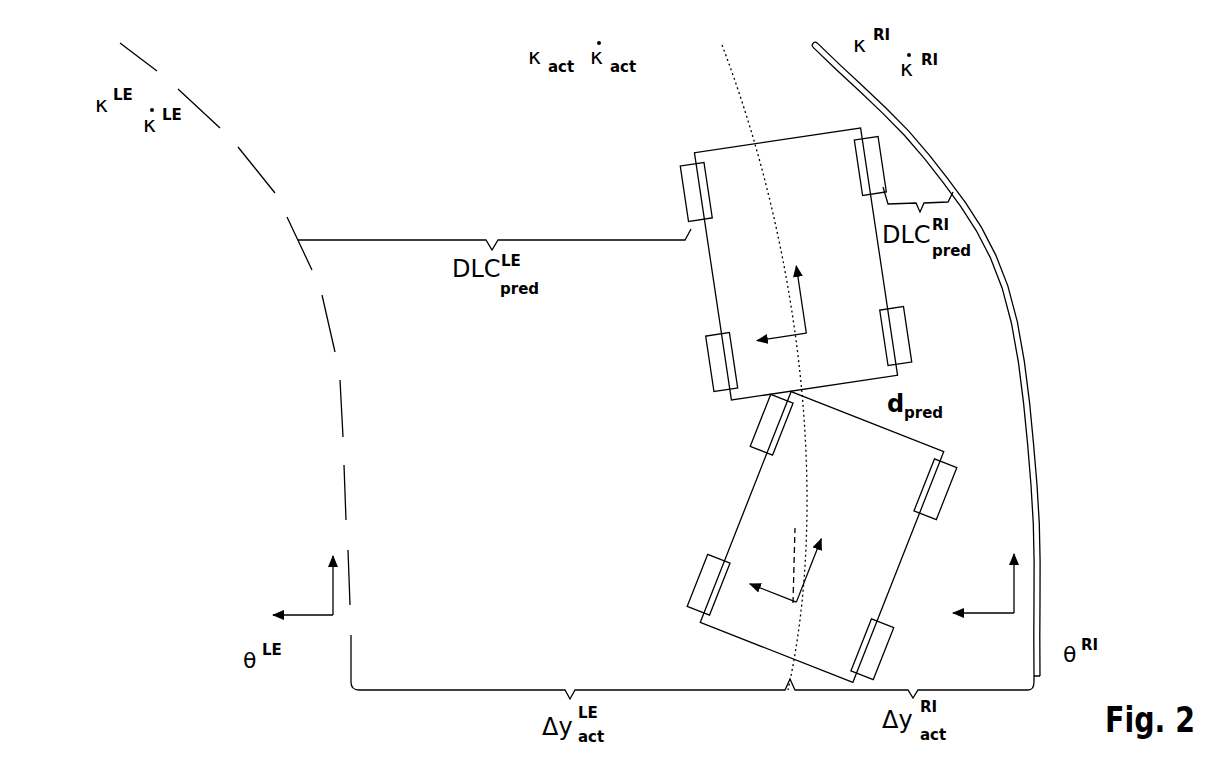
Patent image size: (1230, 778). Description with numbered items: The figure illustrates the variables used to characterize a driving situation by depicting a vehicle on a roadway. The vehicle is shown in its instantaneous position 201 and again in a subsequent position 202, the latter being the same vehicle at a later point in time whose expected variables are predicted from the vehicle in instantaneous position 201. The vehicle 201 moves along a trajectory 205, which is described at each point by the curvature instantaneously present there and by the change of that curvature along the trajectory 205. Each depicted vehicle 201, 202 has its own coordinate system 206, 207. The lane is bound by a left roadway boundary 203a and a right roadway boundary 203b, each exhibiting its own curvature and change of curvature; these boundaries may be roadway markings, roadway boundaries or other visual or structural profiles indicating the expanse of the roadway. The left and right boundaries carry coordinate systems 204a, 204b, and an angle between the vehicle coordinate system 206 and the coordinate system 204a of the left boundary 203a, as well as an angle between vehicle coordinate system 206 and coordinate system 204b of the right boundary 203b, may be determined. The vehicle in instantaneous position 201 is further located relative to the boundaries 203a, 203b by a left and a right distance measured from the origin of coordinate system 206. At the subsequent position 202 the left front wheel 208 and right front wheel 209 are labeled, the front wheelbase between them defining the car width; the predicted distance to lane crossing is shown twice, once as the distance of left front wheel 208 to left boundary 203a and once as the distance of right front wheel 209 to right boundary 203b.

The vehicle in instantaneous position 201 is at (794, 537).
The vehicle in subsequent position 202 is at (802, 263).
The left roadway boundary 203a is at (343, 492).
The right roadway boundary 203b is at (1039, 494).
The coordinate system of left roadway boundary 204a is at (333, 585).
The coordinate system of right roadway boundary 204b is at (1014, 589).
The trajectory 205 is at (740, 108).
The vehicle coordinate system 206 is at (810, 575).
The vehicle coordinate system 207 is at (807, 302).
The left front wheel 208 is at (680, 186).
The right front wheel 209 is at (880, 158).